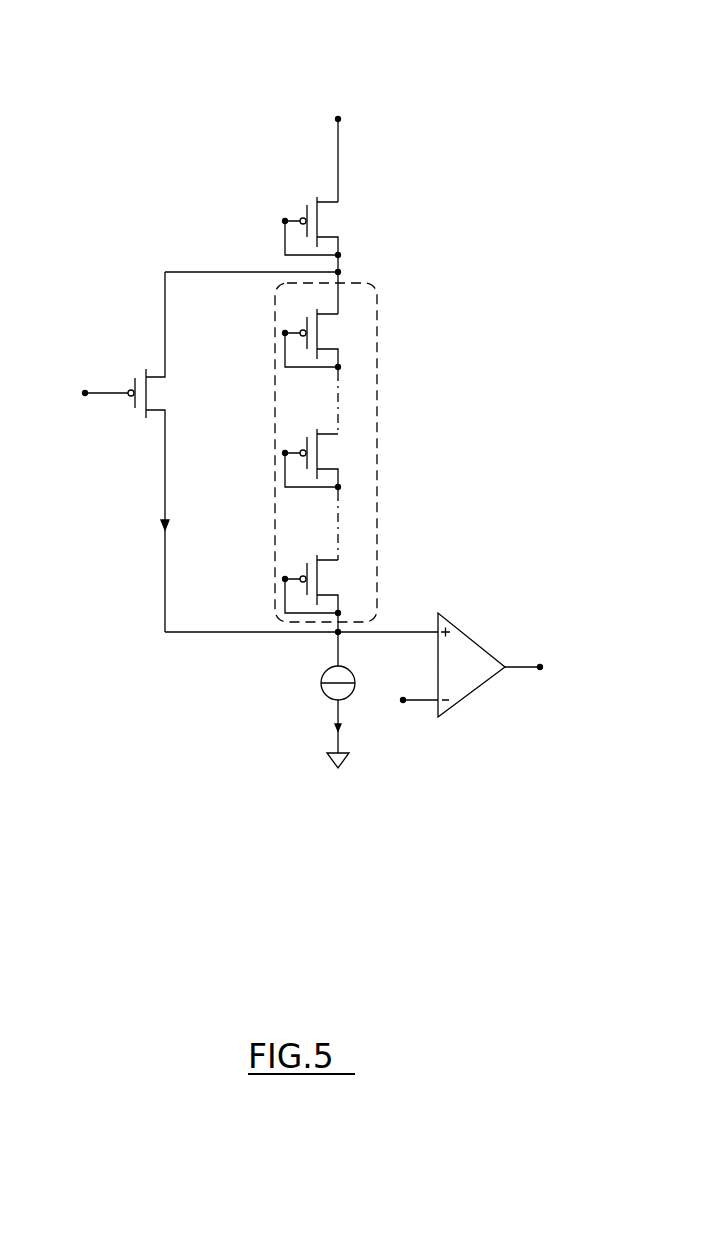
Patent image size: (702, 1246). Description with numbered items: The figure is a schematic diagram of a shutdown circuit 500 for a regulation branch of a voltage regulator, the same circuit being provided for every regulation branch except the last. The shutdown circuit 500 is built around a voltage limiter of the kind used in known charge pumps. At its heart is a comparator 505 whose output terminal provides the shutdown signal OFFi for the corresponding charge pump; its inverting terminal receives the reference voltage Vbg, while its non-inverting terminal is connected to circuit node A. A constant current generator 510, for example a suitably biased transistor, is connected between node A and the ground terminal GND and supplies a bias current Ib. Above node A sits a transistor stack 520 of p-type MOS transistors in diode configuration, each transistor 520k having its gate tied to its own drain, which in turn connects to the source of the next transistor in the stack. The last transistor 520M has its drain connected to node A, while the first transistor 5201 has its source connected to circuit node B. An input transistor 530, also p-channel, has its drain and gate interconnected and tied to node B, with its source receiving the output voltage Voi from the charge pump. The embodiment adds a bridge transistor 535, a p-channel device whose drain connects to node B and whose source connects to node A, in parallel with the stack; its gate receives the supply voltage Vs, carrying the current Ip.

The shutdown circuit 500 is at (95, 99).
The input transistor 530 is at (337, 221).
The transistor stack 520 is at (369, 442).
The first transistor 5201 is at (338, 333).
The transistor 520k is at (338, 453).
The last transistor 520M is at (338, 580).
The bridge transistor 535 is at (146, 370).
The constant current generator 510 is at (320, 692).
The comparator 505 is at (483, 645).